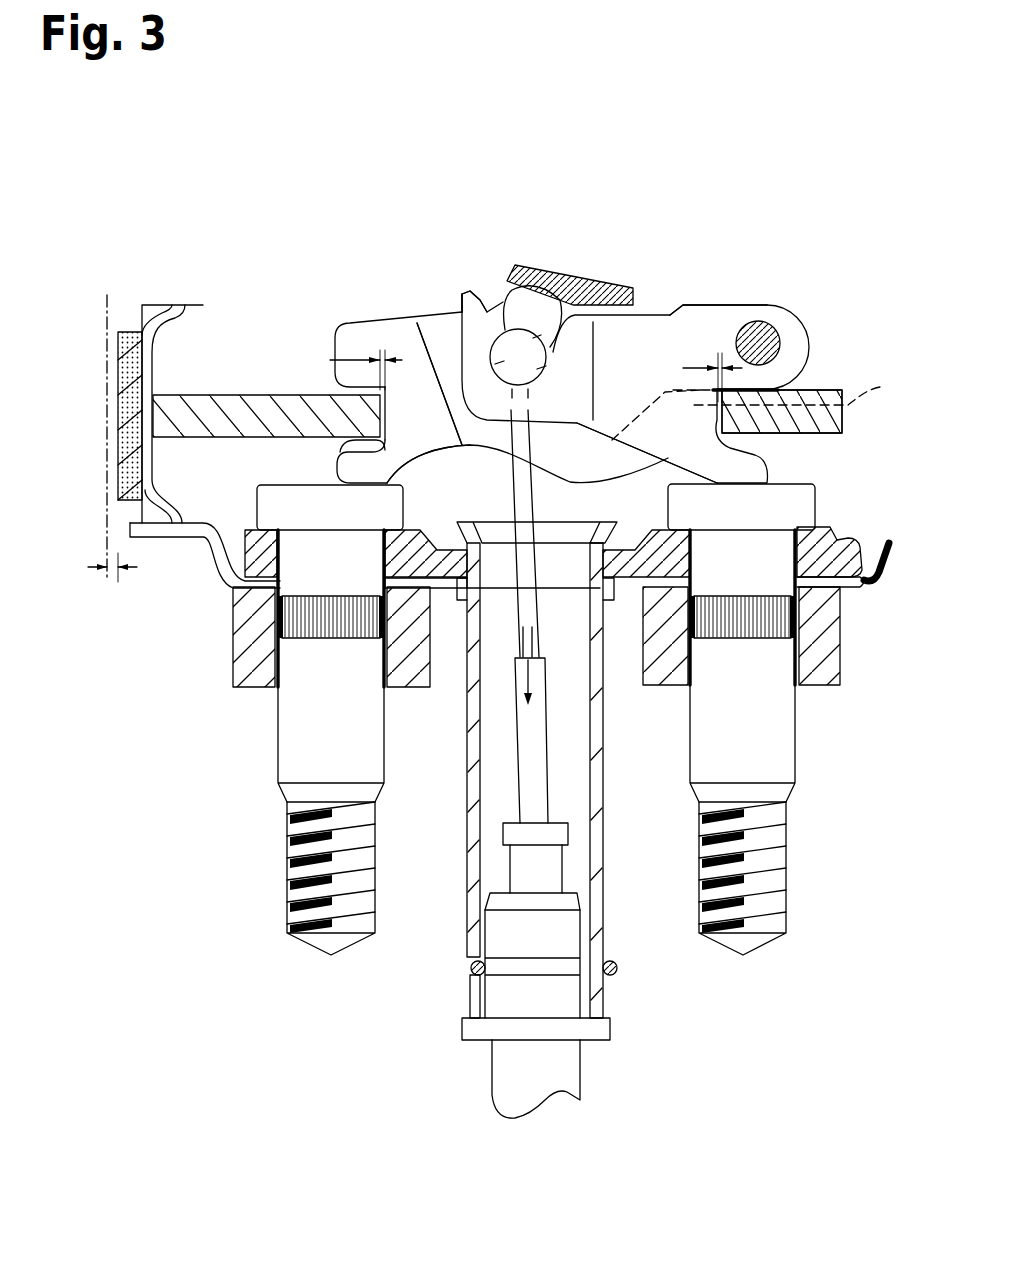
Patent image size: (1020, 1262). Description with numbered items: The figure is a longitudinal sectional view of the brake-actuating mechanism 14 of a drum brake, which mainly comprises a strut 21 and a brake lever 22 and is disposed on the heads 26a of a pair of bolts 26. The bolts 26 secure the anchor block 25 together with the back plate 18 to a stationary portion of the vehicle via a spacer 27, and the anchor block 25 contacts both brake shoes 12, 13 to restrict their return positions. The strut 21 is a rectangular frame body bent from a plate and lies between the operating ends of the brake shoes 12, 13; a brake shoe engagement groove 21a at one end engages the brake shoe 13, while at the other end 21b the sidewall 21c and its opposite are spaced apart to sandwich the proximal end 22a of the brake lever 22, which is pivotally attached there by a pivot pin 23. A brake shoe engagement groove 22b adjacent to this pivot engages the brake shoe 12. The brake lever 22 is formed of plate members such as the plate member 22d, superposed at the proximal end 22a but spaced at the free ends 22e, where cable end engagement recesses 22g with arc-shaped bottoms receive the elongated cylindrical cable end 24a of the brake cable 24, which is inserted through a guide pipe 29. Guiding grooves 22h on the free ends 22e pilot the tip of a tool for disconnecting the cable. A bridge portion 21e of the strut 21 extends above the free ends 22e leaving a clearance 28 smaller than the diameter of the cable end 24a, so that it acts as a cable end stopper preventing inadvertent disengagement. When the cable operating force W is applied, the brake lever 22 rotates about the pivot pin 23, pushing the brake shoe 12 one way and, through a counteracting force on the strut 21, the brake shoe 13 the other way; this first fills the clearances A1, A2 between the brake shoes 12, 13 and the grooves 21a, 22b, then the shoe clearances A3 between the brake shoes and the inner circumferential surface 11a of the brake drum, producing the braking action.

The inner circumferential surface 11a is at (118, 305).
The brake shoe 12 is at (823, 388).
The brake shoe 13 is at (167, 300).
The brake-actuating mechanism 14 is at (792, 278).
The back plate 18 is at (885, 582).
The strut 21 is at (358, 318).
The brake shoe engagement groove 21a is at (343, 445).
The other end of the strut 21b is at (774, 406).
The sidewall 21c is at (435, 328).
The bridge portion 21e is at (600, 312).
The brake lever 22 is at (775, 467).
The proximal end 22a is at (793, 333).
The brake shoe engagement groove 22b is at (840, 436).
The plate member 22d is at (672, 437).
The free ends 22e is at (472, 295).
The cable end engagement recess 22g is at (487, 425).
The guiding groove 22h is at (503, 300).
The pivot pin 23 is at (767, 325).
The brake cable 24 is at (510, 738).
The cable end 24a is at (547, 345).
The anchor block 25 is at (852, 535).
The bolt 26 is at (275, 718).
The bolt head 26a is at (262, 500).
The spacer 27 is at (233, 640).
The clearance 28 is at (500, 300).
The guide pipe 29 is at (607, 840).
The cable operating force W is at (527, 672).
The clearance A1 is at (342, 364).
The clearance A2 is at (692, 376).
The shoe clearance A3 is at (112, 591).